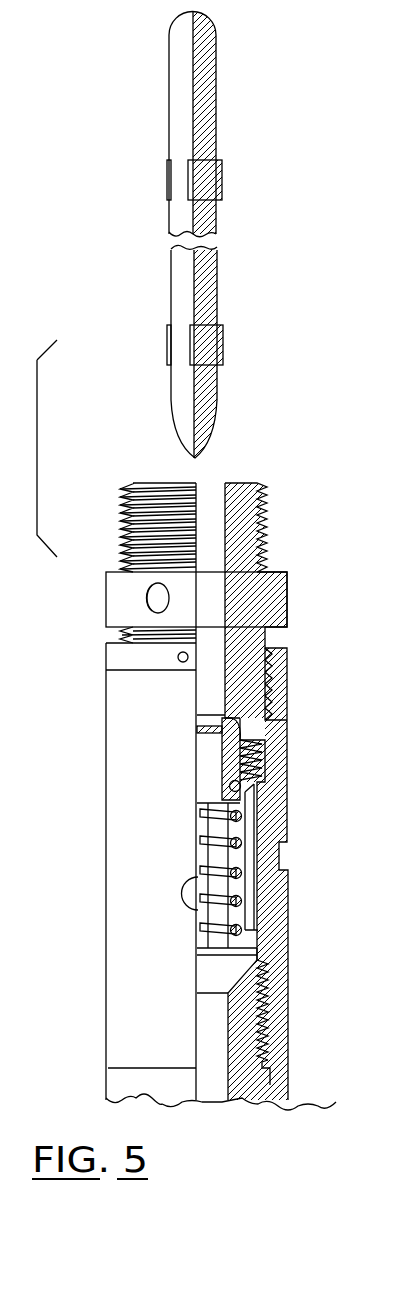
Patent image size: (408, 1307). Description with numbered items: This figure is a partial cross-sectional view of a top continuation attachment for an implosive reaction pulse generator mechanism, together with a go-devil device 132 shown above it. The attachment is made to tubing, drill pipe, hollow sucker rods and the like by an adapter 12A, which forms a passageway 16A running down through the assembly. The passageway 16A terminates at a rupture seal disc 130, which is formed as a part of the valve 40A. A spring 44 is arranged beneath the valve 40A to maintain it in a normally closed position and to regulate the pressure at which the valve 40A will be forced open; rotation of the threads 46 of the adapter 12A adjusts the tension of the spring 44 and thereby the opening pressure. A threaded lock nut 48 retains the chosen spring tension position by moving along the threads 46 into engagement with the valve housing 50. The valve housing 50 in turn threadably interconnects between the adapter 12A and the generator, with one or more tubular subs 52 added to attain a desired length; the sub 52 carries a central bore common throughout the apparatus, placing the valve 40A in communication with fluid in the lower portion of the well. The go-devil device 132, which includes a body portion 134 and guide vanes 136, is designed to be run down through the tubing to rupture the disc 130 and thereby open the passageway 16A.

The go-devil device 132 is at (133, 281).
The body portion 134 is at (210, 290).
The guide vanes 136 is at (192, 351).
The adapter 12A is at (267, 572).
The threaded lock nut 48 is at (283, 652).
The passageway 16A is at (207, 693).
The rupture seal disc 130 is at (197, 730).
The valve 40A is at (222, 750).
The threads 46 is at (270, 752).
The spring 44 is at (208, 868).
The valve housing 50 is at (283, 962).
The tubular sub 52 is at (283, 1085).